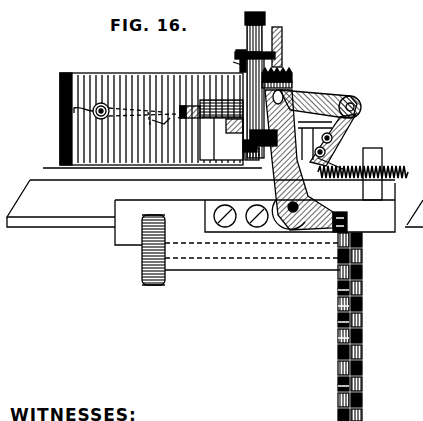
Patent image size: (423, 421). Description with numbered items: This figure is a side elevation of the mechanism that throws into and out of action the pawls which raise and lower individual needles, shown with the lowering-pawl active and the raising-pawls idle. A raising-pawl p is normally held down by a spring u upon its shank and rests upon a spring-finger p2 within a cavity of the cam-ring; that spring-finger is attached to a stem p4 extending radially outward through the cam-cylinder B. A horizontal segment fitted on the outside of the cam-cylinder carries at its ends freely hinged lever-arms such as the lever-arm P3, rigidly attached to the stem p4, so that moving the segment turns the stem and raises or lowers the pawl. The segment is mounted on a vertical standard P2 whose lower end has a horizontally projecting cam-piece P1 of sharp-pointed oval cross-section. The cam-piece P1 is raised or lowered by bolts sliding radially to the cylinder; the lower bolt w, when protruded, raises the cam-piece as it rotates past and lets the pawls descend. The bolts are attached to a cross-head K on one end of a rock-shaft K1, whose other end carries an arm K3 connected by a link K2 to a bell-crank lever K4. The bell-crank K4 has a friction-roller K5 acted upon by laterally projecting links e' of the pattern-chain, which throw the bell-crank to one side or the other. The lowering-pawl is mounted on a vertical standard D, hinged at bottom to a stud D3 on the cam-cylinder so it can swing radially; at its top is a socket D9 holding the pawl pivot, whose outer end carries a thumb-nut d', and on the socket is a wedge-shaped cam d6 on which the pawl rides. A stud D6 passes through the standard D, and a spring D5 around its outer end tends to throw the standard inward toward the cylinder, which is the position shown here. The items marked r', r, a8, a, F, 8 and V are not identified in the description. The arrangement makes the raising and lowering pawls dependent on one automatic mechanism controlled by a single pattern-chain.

The cam-cylinder B is at (60, 100).
The springs u is at (100, 105).
The raising-pawl p is at (130, 112).
The lever arm r' is at (147, 107).
The lever r is at (161, 106).
The stem p4 is at (200, 108).
The spring-finger p2 is at (178, 119).
The lever-arm P3 is at (221, 139).
The vertical standard P2 is at (234, 131).
The stud D3 is at (242, 150).
The cam-piece P1 is at (258, 159).
The vertical standard D is at (282, 72).
The socket D9 is at (266, 58).
The thumb-nut d' is at (268, 44).
The spring D5 is at (293, 73).
The stud D6 is at (296, 83).
The pawl a8 is at (240, 50).
The wedge-shaped cam d6 is at (236, 56).
The arm a is at (233, 64).
The cross-head K is at (337, 147).
The link K2 is at (320, 98).
The arm K3 is at (354, 109).
The rock-shaft K1 is at (337, 132).
The bolt w is at (334, 134).
The bell-crank lever K4 is at (310, 230).
The friction-roller K5 is at (341, 212).
The spring F is at (393, 174).
The spring end 8 is at (408, 137).
The chain V is at (359, 268).
The laterally-projecting links e' is at (334, 340).